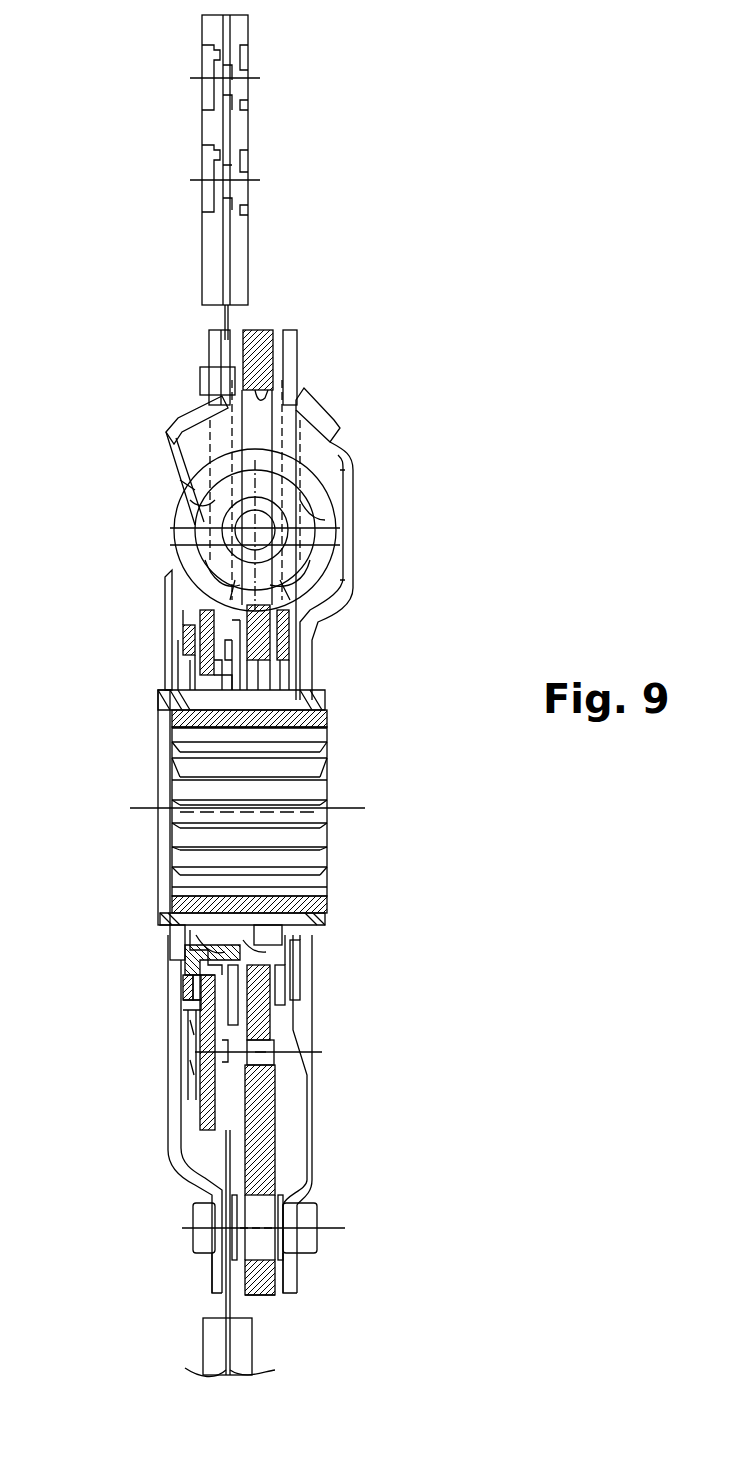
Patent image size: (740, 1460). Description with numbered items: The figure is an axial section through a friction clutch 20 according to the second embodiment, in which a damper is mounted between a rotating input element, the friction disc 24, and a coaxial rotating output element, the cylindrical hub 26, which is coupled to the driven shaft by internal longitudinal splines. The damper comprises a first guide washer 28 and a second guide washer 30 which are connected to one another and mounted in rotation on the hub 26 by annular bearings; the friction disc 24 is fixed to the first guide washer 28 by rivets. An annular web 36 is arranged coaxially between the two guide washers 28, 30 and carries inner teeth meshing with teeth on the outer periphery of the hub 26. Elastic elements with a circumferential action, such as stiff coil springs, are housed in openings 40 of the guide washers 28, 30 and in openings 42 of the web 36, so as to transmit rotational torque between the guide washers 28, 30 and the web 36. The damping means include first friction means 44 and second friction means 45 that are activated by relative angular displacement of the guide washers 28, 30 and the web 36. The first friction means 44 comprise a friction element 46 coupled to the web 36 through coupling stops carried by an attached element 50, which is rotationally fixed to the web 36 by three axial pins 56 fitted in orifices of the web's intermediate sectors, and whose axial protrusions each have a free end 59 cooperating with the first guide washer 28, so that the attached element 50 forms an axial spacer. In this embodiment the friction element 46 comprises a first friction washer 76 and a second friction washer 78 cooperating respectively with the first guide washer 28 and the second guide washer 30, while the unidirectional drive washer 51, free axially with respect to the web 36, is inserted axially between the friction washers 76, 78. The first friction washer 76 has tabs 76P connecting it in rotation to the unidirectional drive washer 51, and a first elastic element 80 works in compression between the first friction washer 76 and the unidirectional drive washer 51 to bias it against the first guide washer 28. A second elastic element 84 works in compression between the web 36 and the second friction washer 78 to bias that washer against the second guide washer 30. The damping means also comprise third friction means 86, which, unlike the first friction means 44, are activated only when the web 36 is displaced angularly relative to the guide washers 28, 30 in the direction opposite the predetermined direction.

The friction clutch 20 is at (135, 166).
The friction disc 24 is at (252, 238).
The cylindrical hub 26 is at (325, 714).
The first guide washer 28 is at (214, 340).
The second guide washer 30 is at (298, 338).
The annular web 36 is at (260, 332).
The openings 40 is at (177, 432).
The openings 42 is at (272, 402).
The first friction means 44 is at (168, 1055).
The second friction means 45 is at (170, 965).
The friction element 46 is at (200, 1088).
The attached element 50 is at (218, 905).
The unidirectional drive washer 51 is at (202, 1110).
The axial pins 56 is at (273, 1082).
The free end 59 is at (172, 950).
The first friction washer 76 is at (185, 988).
The tabs 76P is at (194, 1000).
The second friction washer 78 is at (302, 627).
The first elastic element 80 is at (180, 642).
The second elastic element 84 is at (280, 980).
The third friction means 86 is at (262, 918).